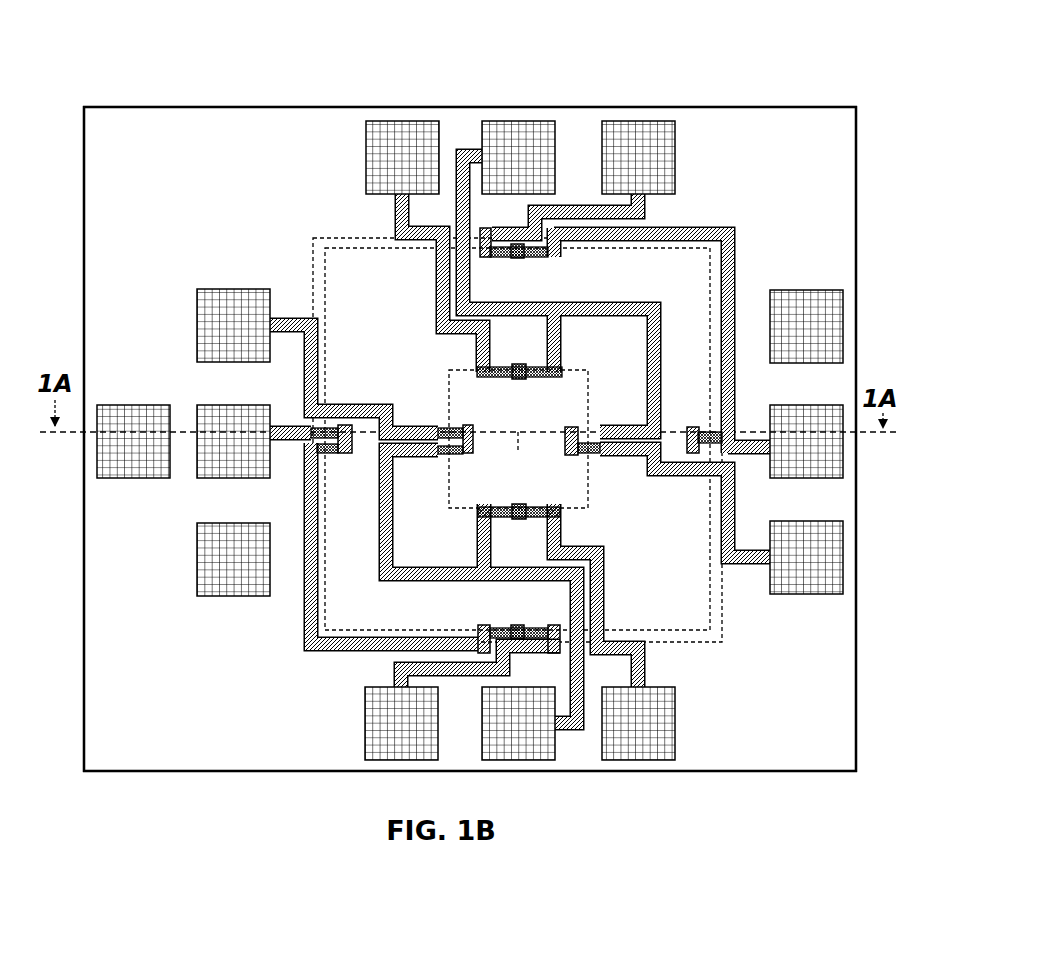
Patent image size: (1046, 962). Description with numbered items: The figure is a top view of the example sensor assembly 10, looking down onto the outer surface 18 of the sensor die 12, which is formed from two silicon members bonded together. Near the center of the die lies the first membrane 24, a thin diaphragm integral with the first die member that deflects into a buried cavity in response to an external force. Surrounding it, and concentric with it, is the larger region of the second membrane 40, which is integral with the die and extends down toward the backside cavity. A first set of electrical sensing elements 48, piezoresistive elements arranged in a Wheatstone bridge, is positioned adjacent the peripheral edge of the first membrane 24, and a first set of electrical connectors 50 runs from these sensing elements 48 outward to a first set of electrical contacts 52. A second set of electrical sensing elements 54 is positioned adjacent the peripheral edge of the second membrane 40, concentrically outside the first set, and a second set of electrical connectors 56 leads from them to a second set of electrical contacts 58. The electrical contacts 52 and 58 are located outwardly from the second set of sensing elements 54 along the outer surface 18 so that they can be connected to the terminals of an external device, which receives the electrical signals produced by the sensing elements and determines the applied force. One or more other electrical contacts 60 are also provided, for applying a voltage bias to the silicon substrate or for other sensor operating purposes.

The sensor assembly 10 is at (820, 48).
The sensor die 12 is at (836, 100).
The outer surface 18 is at (840, 178).
The first membrane 24 is at (449, 385).
The second membrane 40 is at (722, 630).
The first set of electrical sensing elements 48 is at (526, 366).
The first set of electrical connectors 50 is at (470, 454).
The first set of electrical contacts 52 is at (493, 140).
The second set of electrical sensing elements 54 is at (486, 258).
The second set of electrical connectors 56 is at (770, 223).
The second set of electrical contacts 58 is at (675, 152).
The other electrical contacts 60 is at (130, 406).